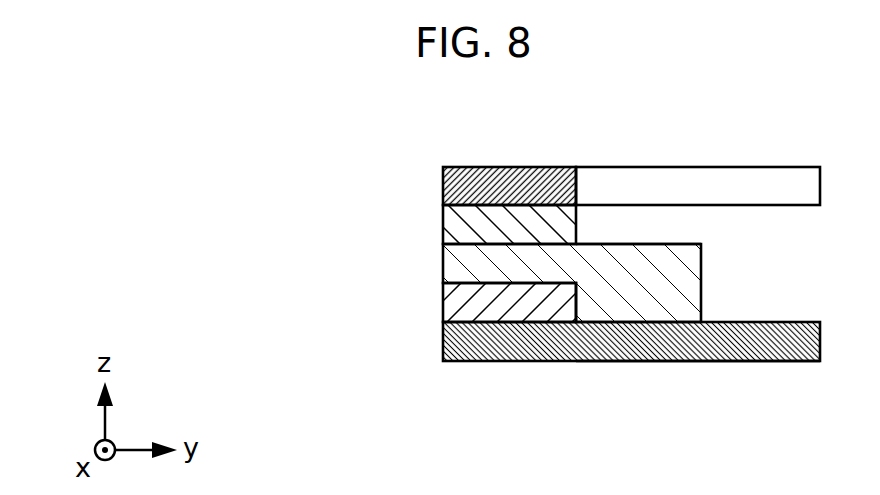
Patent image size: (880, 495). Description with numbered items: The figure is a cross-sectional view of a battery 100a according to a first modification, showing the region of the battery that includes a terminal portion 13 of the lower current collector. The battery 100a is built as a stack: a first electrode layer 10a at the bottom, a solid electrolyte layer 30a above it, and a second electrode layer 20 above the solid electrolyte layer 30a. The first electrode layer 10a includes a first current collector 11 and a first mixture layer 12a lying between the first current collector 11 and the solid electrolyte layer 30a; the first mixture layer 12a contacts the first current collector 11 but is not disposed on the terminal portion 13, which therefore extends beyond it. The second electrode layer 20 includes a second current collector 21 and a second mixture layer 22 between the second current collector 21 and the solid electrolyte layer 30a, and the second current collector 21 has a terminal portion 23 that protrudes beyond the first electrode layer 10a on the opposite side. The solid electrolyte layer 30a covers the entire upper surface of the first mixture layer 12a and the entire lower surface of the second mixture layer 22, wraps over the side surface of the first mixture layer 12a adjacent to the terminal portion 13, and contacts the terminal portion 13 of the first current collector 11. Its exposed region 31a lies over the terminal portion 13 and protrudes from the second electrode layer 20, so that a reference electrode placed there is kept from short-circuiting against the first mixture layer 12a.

The battery 100a is at (505, 262).
The second electrode layer 20 is at (442, 204).
The second current collector 21 is at (443, 187).
The second mixture layer 22 is at (443, 224).
The terminal portion 23 is at (819, 162).
The solid electrolyte layer 30a is at (443, 263).
The exposed region 31a is at (675, 244).
The first electrode layer 10a is at (551, 321).
The first mixture layer 12a is at (443, 302).
The first current collector 11 is at (443, 341).
The terminal portion 13 is at (819, 365).